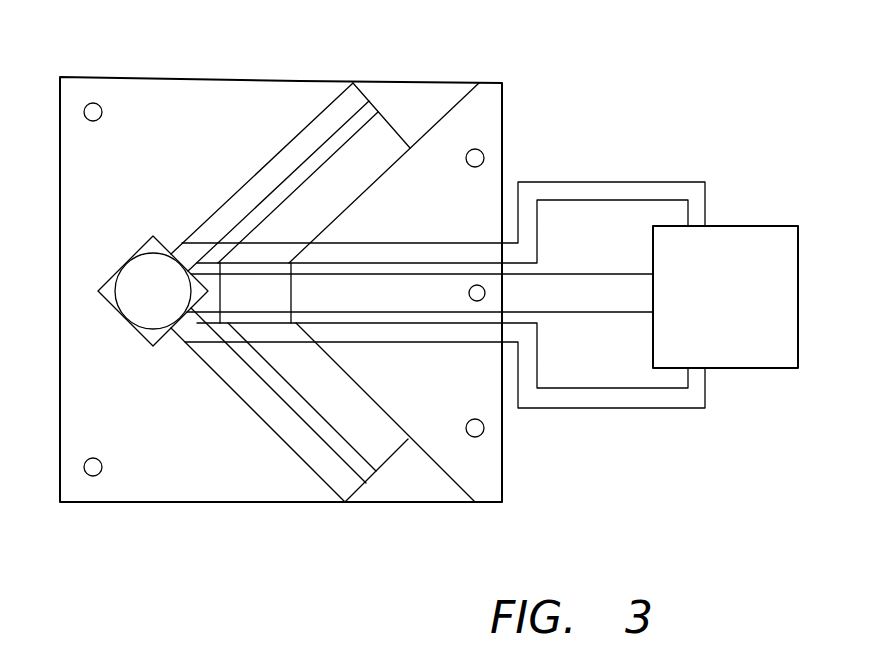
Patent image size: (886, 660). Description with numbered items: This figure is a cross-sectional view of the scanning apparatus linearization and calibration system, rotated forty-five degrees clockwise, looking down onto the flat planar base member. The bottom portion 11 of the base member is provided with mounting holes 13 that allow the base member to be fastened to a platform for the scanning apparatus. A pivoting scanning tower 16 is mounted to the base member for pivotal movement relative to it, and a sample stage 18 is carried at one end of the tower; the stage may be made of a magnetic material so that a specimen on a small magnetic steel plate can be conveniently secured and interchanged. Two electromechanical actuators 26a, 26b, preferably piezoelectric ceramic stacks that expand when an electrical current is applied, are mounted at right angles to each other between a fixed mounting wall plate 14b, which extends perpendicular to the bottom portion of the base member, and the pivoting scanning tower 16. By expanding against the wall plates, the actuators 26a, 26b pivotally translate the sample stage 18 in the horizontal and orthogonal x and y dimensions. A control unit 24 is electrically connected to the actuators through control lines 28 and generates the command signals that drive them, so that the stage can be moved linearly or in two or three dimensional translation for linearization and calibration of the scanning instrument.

The bottom portion 11 is at (60, 368).
The mounting holes 13 is at (84, 108).
The fixed mounting wall plate 14b is at (428, 108).
The pivoting scanning tower 16 is at (108, 298).
The sample stage 18 is at (140, 272).
The control unit 24 is at (772, 226).
The electromechanical actuator 26a is at (278, 415).
The electromechanical actuator 26b is at (278, 170).
The control lines 28 is at (588, 203).